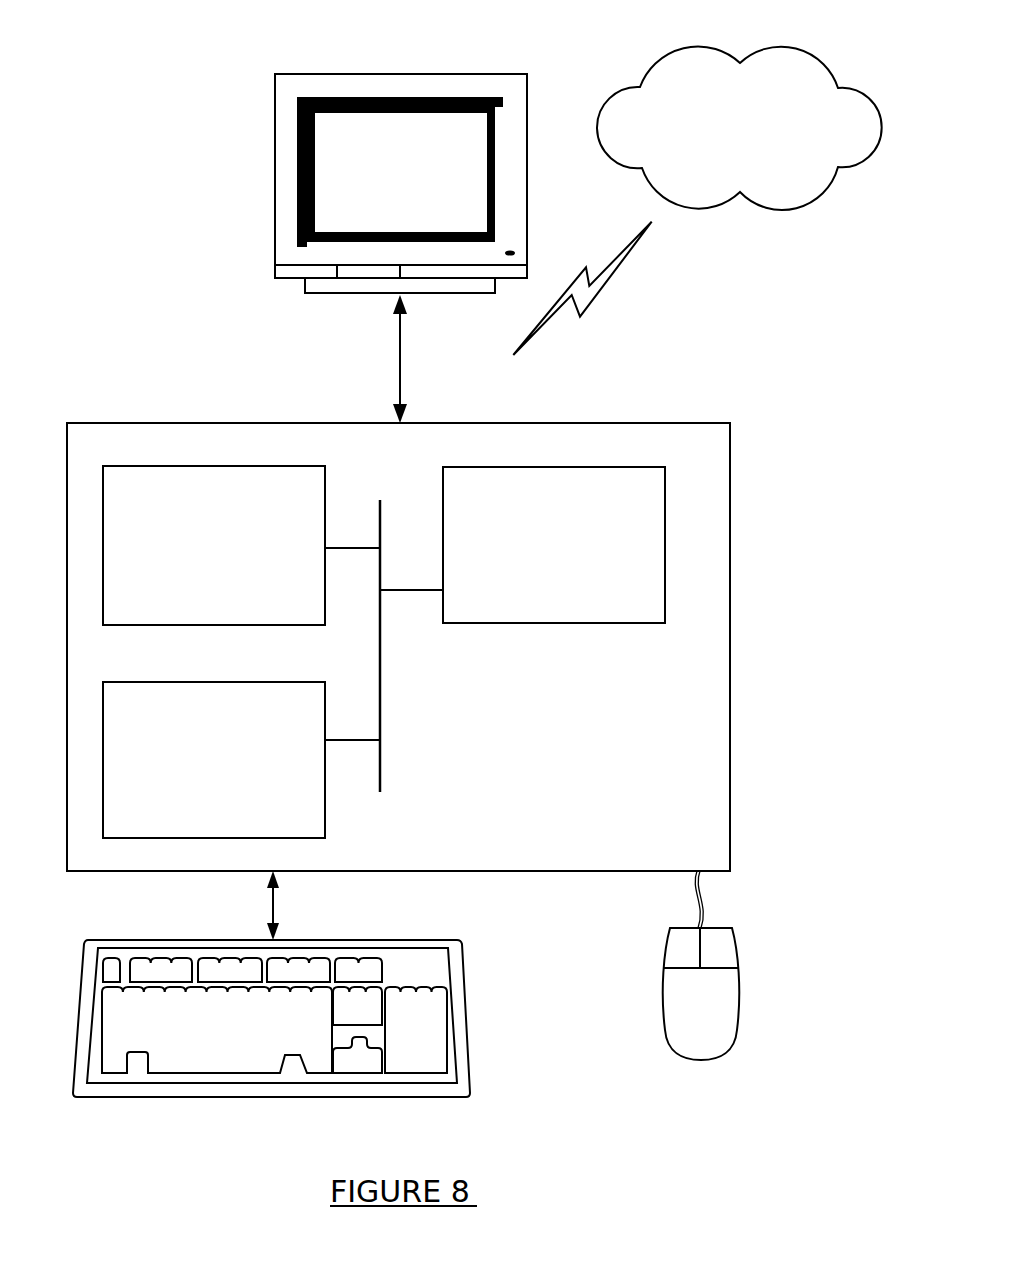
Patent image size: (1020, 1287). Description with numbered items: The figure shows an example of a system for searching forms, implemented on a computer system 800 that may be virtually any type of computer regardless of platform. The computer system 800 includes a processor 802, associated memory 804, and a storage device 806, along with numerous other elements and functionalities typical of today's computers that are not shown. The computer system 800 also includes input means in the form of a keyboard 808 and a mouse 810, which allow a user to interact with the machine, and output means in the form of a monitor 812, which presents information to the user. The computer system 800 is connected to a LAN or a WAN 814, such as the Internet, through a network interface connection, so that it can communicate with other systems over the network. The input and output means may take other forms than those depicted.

The computer system 800 is at (812, 382).
The processor 802 is at (574, 562).
The associated memory 804 is at (236, 557).
The storage device 806 is at (233, 772).
The keyboard 808 is at (226, 1055).
The mouse 810 is at (721, 1012).
The monitor 812 is at (421, 190).
The LAN or WAN 814 is at (753, 150).